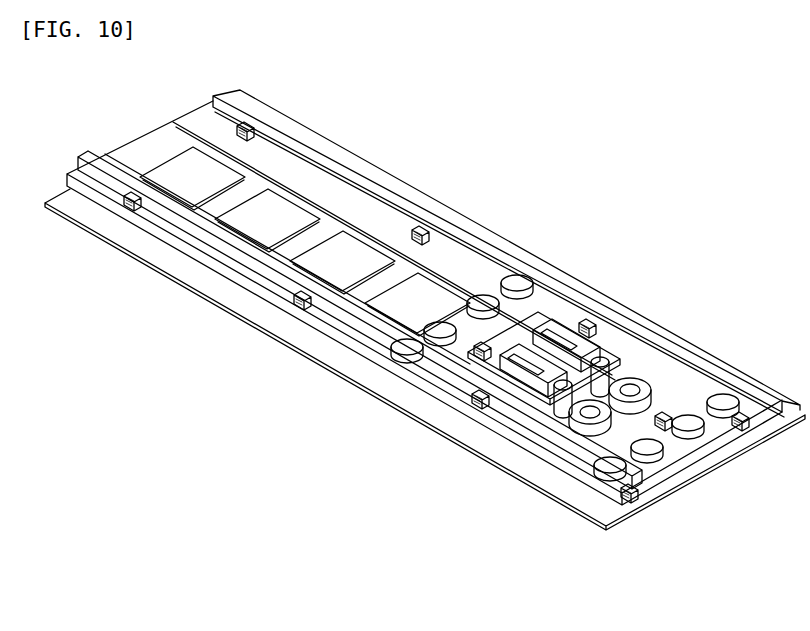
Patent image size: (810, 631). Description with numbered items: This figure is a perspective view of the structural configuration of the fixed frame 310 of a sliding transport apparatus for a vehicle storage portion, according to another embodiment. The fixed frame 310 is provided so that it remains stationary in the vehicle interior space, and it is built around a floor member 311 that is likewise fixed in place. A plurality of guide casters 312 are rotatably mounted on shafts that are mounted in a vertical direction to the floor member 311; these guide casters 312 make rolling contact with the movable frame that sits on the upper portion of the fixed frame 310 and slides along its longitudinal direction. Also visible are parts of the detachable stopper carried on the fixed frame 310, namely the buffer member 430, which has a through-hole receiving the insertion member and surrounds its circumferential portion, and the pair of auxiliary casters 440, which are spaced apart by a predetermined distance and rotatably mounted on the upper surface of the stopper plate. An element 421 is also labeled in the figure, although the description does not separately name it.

The fixed frame 310 is at (425, 351).
The floor member 311 is at (698, 462).
The guide casters 312 is at (692, 477).
The guide rail 421 is at (593, 283).
The buffer member 430 is at (622, 315).
The auxiliary casters 440 is at (660, 373).